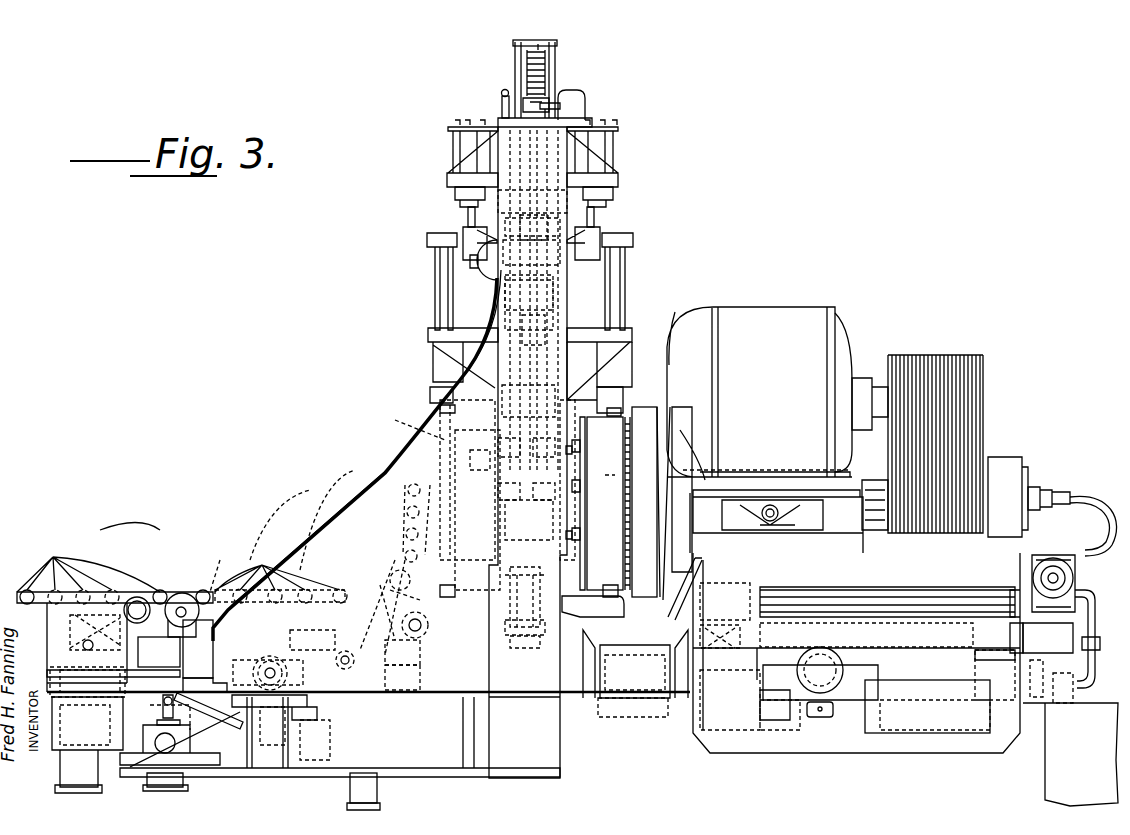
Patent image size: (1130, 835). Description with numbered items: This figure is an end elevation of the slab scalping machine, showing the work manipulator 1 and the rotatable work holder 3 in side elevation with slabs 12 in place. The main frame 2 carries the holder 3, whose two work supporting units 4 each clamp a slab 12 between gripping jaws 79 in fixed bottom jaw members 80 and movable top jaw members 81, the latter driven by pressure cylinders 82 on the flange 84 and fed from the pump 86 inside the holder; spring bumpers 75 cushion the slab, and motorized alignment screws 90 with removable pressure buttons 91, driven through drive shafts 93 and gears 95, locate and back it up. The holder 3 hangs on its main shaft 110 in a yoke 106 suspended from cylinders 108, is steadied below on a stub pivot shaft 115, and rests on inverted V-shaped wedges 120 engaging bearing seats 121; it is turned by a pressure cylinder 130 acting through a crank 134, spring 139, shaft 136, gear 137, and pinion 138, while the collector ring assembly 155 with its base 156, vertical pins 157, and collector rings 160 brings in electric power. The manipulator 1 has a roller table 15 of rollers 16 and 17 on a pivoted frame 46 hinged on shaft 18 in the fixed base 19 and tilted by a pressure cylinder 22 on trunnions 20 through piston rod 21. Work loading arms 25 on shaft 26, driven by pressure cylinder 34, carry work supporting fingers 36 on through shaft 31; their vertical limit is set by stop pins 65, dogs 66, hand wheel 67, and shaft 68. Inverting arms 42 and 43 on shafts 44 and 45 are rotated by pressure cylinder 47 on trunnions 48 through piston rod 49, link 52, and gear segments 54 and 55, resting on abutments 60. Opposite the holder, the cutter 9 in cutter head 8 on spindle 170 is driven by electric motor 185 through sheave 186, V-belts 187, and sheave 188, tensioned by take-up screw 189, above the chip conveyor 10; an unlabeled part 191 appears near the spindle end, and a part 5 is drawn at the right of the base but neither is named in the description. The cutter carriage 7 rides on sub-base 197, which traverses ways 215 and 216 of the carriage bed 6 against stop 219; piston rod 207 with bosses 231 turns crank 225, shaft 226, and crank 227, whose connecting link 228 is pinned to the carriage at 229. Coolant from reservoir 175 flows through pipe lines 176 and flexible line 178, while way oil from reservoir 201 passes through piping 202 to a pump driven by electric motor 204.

The work manipulator 1 is at (350, 480).
The main frame 2 is at (600, 168).
The rotatable work holder 3 is at (560, 305).
The work supporting unit 4 is at (432, 372).
The conduit 5 is at (1068, 675).
The carriage bed 6 is at (896, 714).
The cutter carriage 7 is at (763, 561).
The cutter head 8 is at (640, 438).
The cutter 9 is at (628, 488).
The chip conveyor 10 is at (633, 652).
The slab 12 is at (433, 433).
The roller table 15 is at (113, 585).
The roller 16 is at (178, 565).
The roller 17 is at (182, 595).
The shaft 18 is at (283, 668).
The fixed manipulator base 19 is at (305, 747).
The trunnions 20 is at (148, 740).
The piston rod 21 is at (162, 705).
The pressure cylinder 22 is at (176, 786).
The work loading arms 25 is at (395, 485).
The shaft 26 is at (430, 624).
The through shaft 31 is at (395, 560).
The pressure cylinder 34 is at (362, 796).
The work supporting fingers 36 is at (430, 600).
The work inverting arms 42 is at (42, 605).
The work inverting arms 43 is at (320, 590).
The shaft 44 is at (137, 597).
The shaft 45 is at (222, 590).
The pivoted manipulator frame 46 is at (172, 662).
The pressure cylinder 47 is at (69, 781).
The trunnions 48 is at (55, 682).
The piston rod 49 is at (60, 662).
The adjustable link 52 is at (205, 712).
The gear segment 54 is at (192, 689).
The gear segment 55 is at (192, 659).
The abutments 60 is at (68, 635).
The adjustable stop pins 65 is at (406, 678).
The dogs 66 is at (398, 665).
The hand wheel 67 is at (346, 650).
The shaft 68 is at (349, 657).
The spring bumpers 75 is at (582, 492).
The gripping jaws 79 is at (440, 407).
The bottom jaw members 80 is at (568, 611).
The top jaw members 81 is at (433, 391).
The pressure cylinders 82 is at (440, 256).
The flange 84 is at (630, 330).
The pump 86 is at (470, 262).
The alignment screws 90 is at (582, 446).
The pressure buttons 91 is at (580, 455).
The drive shafts 93 is at (527, 469).
The gears 95 is at (555, 438).
The yoke 106 is at (560, 241).
The cylinders 108 is at (458, 140).
The main shaft 110 is at (548, 225).
The stub pivot shaft 115 is at (518, 606).
The inverted V-shaped wedges 120 is at (548, 625).
The bearing seats 121 is at (546, 652).
The pressure cylinder 130 is at (585, 100).
The crank 134 is at (560, 108).
The shaft 136 is at (556, 50).
The gear 137 is at (590, 196).
The pinion 138 is at (562, 207).
The spring 139 is at (548, 80).
The collector ring assembly 155 is at (515, 50).
The base 156 is at (500, 112).
The vertical pins 157 is at (502, 94).
The collector rings 160 is at (534, 75).
The spindle 170 is at (873, 480).
The reservoir 175 is at (1097, 758).
The pipe lines 176 is at (1097, 605).
The flexible line 178 is at (1085, 500).
The electric motor 185 is at (775, 322).
The sheave 186 is at (985, 395).
The V-belts 187 is at (975, 358).
The sheave 188 is at (1000, 457).
The take-up screw 189 is at (762, 514).
The coupling 191 is at (1005, 462).
The sub-base 197 is at (862, 641).
The reservoir 201 is at (1020, 640).
The piping 202 is at (1050, 658).
The electric motor 204 is at (1076, 577).
The piston rod 207 is at (850, 680).
The way 215 is at (722, 652).
The way 216 is at (985, 662).
The stop 219 is at (668, 600).
The crank 225 is at (845, 665).
The shaft 226 is at (765, 703).
The crank 227 is at (785, 598).
The connecting link 228 is at (912, 598).
The pin connection 229 is at (1045, 555).
The bosses 231 is at (822, 716).